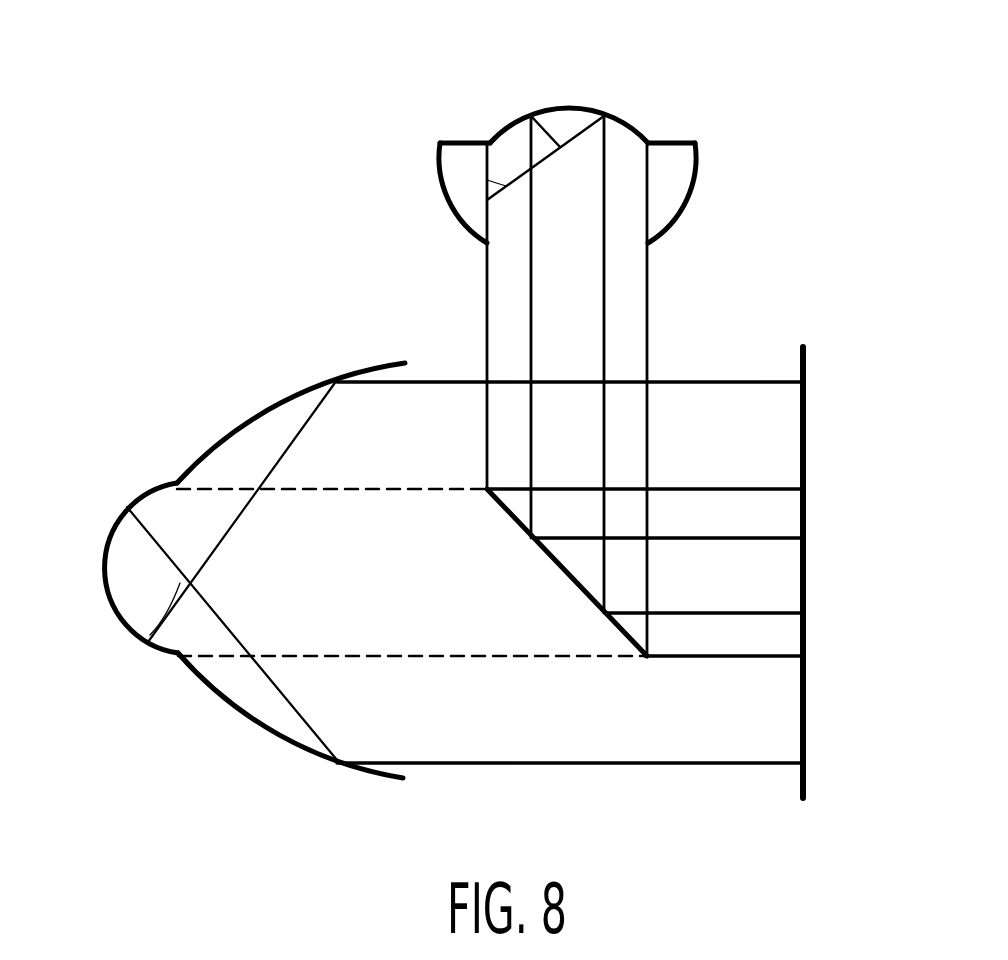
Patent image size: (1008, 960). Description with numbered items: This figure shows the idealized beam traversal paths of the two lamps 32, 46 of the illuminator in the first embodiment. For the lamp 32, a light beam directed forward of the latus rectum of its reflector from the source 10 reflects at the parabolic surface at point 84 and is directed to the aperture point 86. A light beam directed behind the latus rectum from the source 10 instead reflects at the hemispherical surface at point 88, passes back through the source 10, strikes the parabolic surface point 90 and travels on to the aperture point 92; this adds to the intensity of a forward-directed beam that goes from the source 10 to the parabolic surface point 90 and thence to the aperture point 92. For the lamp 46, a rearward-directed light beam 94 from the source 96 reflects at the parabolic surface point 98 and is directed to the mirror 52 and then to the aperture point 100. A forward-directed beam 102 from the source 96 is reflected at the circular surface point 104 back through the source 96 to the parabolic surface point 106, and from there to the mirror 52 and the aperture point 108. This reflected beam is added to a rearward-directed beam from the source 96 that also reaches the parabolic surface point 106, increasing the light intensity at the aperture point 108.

The source 10 is at (150, 635).
The lamp 32 is at (250, 430).
The lamp 46 is at (695, 165).
The mirror 52 is at (560, 565).
The parabolic surface point 84 is at (335, 377).
The aperture point 86 is at (803, 383).
The hemispherical surface point 88 is at (130, 510).
The parabolic surface point 90 is at (337, 762).
The aperture point 92 is at (803, 763).
The rearward-directed light beam 94 is at (522, 128).
The source 96 is at (562, 147).
The parabolic surface point 98 is at (533, 120).
The aperture point 100 is at (803, 538).
The forward-directed beam 102 is at (490, 181).
The circular surface point 104 is at (487, 200).
The parabolic surface point 106 is at (605, 118).
The aperture point 108 is at (803, 613).